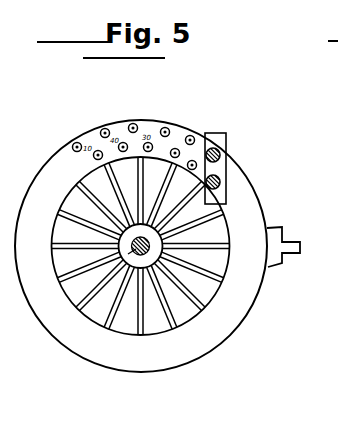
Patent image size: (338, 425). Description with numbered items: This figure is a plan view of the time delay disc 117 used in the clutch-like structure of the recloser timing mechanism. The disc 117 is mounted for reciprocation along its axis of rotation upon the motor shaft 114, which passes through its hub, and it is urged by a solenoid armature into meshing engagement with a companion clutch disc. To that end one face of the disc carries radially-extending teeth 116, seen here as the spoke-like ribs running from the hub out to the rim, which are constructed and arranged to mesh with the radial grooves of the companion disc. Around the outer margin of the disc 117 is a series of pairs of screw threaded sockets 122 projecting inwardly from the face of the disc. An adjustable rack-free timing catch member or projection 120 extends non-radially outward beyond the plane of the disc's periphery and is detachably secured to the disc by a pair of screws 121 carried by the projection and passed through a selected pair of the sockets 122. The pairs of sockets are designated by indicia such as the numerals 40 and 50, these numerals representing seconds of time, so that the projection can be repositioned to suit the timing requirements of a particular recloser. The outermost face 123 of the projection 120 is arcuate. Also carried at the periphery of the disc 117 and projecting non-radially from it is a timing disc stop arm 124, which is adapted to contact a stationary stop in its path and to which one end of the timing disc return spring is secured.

The time delay disc 117 is at (78, 114).
The motor shaft 114 is at (81, 301).
The radially-extending teeth 116 is at (221, 218).
The screw threaded sockets 122 is at (109, 131).
The outermost face 123 is at (218, 129).
The timing catch member 120 is at (219, 150).
The screws 121 is at (208, 186).
The timing disc stop arm 124 is at (292, 255).
The indicia 40 is at (172, 141).
The indicia 50 is at (194, 151).